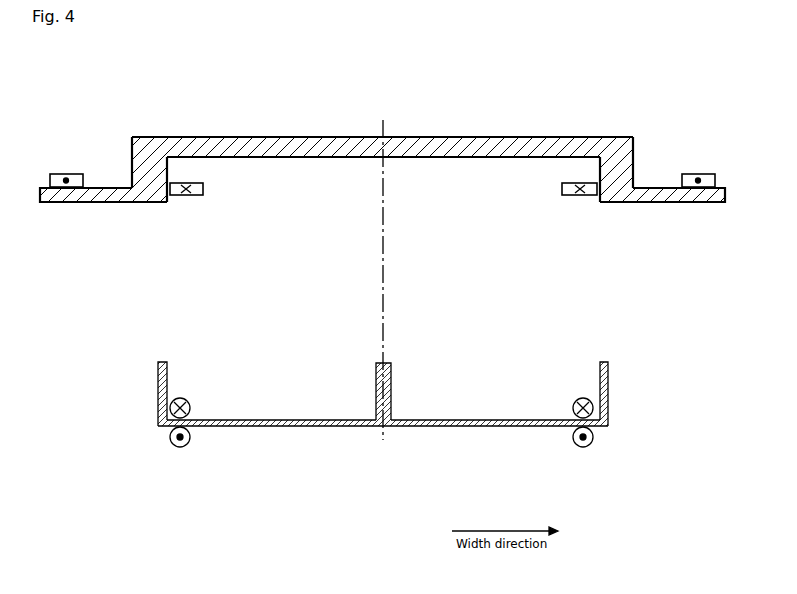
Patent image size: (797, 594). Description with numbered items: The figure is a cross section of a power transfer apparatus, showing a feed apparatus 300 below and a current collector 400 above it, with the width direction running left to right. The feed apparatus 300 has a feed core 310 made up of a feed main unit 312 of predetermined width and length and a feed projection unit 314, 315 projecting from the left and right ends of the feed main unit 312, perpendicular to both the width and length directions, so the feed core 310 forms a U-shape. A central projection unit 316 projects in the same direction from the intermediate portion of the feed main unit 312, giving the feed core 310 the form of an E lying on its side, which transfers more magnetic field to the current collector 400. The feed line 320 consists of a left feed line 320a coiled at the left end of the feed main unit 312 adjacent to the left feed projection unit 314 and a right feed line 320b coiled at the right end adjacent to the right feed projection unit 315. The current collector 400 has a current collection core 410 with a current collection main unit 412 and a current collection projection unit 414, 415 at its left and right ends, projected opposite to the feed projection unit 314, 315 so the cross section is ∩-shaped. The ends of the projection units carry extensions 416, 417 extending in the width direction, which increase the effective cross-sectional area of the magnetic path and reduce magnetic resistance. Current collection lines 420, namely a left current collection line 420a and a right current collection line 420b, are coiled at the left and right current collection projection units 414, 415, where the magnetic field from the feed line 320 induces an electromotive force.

The current collector 400 is at (688, 78).
The current collection core 410 is at (658, 88).
The current collection main unit 412 is at (444, 137).
The left current collection projection unit 414 is at (166, 160).
The right current collection projection unit 415 is at (593, 137).
The extension 416 is at (107, 188).
The extension 417 is at (658, 188).
The current collection lines 420 is at (655, 243).
The left current collection line 420a is at (85, 203).
The right current collection line 420b is at (580, 196).
The feed apparatus 300 is at (634, 355).
The feed core 310 is at (165, 469).
The feed main unit 312 is at (323, 426).
The left feed projection unit 314 is at (158, 405).
The right feed projection unit 315 is at (608, 405).
The central projection unit 316 is at (391, 392).
The feed line 320 is at (533, 344).
The left feed line 320a is at (192, 437).
The right feed line 320b is at (572, 437).